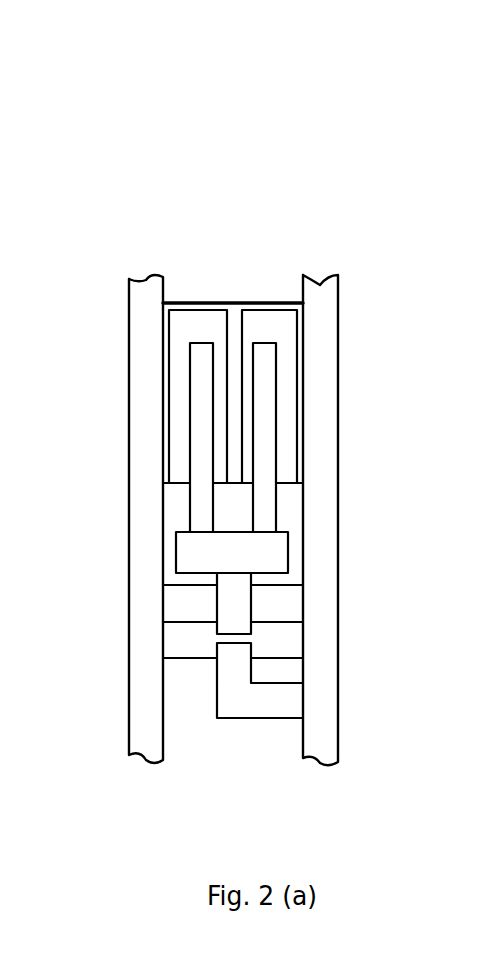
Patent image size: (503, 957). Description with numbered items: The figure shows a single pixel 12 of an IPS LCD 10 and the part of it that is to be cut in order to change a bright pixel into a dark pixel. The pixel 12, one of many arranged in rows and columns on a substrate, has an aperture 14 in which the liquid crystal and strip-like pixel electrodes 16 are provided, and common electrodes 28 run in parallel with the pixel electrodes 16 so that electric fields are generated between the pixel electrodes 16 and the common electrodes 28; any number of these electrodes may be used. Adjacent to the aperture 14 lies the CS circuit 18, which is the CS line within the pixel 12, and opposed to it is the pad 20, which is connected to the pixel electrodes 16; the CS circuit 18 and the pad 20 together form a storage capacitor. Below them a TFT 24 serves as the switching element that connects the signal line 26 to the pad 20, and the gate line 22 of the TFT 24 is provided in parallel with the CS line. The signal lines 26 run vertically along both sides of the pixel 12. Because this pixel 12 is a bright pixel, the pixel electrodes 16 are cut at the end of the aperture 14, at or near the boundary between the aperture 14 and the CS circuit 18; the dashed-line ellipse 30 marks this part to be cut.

The IPS LCD 10 is at (164, 108).
The pixel 12 is at (320, 248).
The aperture 14 is at (260, 294).
The pixel electrodes 16 is at (198, 382).
The CS circuit 18 is at (293, 513).
The pad 20 is at (273, 558).
The gate line 22 is at (290, 635).
The TFT 24 is at (210, 663).
The signal line 26 is at (145, 700).
The common electrodes 28 is at (234, 303).
The ellipse 30 is at (282, 483).